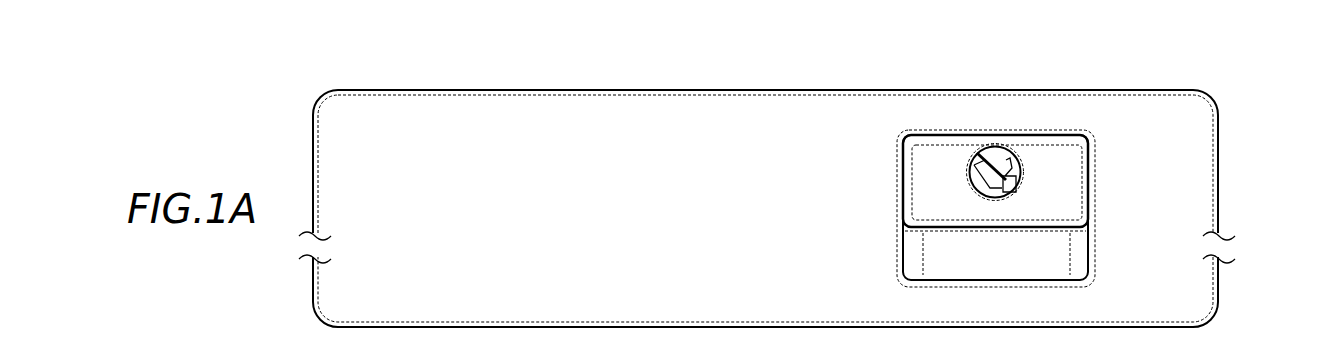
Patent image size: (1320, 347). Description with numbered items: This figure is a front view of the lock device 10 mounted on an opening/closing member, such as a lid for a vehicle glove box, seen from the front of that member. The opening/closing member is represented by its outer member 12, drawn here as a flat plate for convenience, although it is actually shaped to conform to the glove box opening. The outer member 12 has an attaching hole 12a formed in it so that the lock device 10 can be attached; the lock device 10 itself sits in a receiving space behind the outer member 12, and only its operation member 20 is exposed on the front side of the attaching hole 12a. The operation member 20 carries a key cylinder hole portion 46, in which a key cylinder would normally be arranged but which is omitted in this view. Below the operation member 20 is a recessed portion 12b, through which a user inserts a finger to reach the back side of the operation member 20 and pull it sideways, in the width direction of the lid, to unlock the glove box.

The lock device 10 is at (1056, 126).
The outer member 12 is at (1187, 113).
The attaching hole 12a is at (930, 135).
The recessed portion 12b is at (1055, 248).
The operation member 20 is at (1043, 163).
The key cylinder hole portion 46 is at (987, 150).